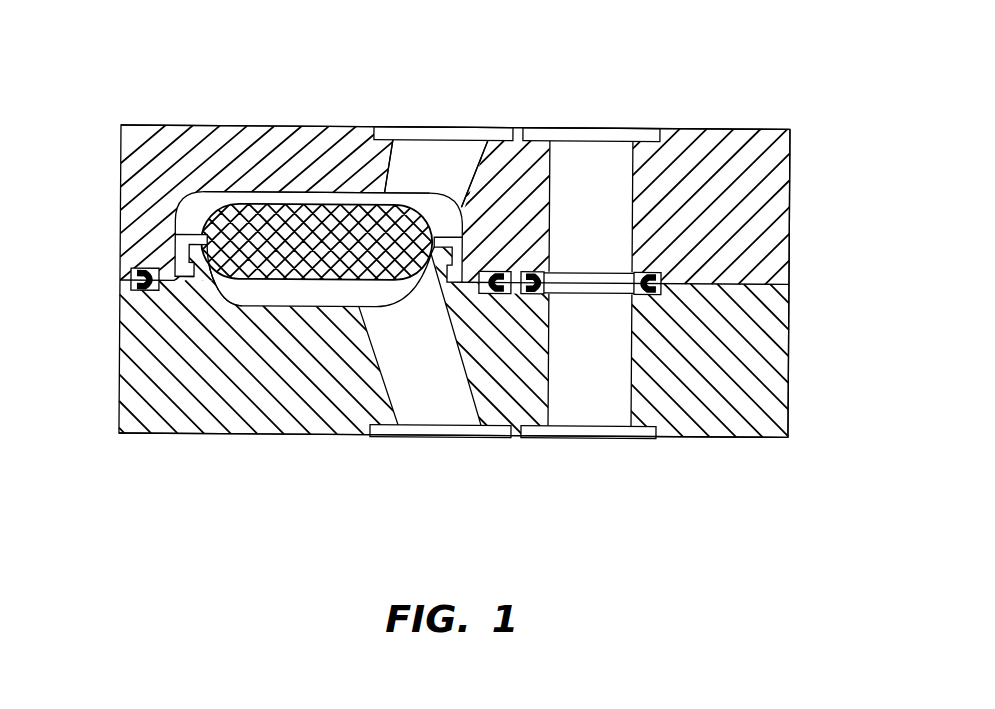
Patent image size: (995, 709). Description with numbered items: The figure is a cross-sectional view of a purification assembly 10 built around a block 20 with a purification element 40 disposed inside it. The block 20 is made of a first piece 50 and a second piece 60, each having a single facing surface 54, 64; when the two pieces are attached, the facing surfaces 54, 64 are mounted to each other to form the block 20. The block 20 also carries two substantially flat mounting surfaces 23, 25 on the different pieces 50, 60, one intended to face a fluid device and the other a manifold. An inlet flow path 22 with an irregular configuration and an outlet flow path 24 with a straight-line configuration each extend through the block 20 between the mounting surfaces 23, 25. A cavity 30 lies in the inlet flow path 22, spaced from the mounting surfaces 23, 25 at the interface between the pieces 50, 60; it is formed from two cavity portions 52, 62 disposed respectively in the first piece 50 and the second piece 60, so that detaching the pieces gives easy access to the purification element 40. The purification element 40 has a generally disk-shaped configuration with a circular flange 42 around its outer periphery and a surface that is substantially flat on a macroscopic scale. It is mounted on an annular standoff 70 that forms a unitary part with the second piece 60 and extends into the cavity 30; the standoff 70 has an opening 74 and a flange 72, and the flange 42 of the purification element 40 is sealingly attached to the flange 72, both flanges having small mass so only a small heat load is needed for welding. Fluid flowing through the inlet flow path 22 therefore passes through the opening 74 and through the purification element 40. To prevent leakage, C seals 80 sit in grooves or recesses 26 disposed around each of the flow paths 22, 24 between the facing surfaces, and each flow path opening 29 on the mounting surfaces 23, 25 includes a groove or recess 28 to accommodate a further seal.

The purification assembly 10 is at (491, 77).
The block 20 is at (763, 218).
The inlet flow path 22 is at (427, 146).
The mounting surface 23 is at (754, 121).
The outlet flow path 24 is at (615, 157).
The mounting surface 25 is at (274, 440).
The groove or recess 26 is at (134, 269).
The groove or recess 28 is at (380, 127).
The flow path opening 29 is at (450, 146).
The cavity 30 is at (207, 199).
The purification element 40 is at (300, 212).
The flange 42 is at (206, 232).
The first piece 50 is at (768, 156).
The cavity portion 52 is at (242, 190).
The facing surface 54 is at (758, 293).
The second piece 60 is at (748, 410).
The cavity portion 62 is at (242, 298).
The facing surface 64 is at (732, 268).
The annular standoff 70 is at (192, 278).
The flange 72 is at (462, 234).
The opening 74 is at (221, 293).
The C seal 80 is at (133, 283).